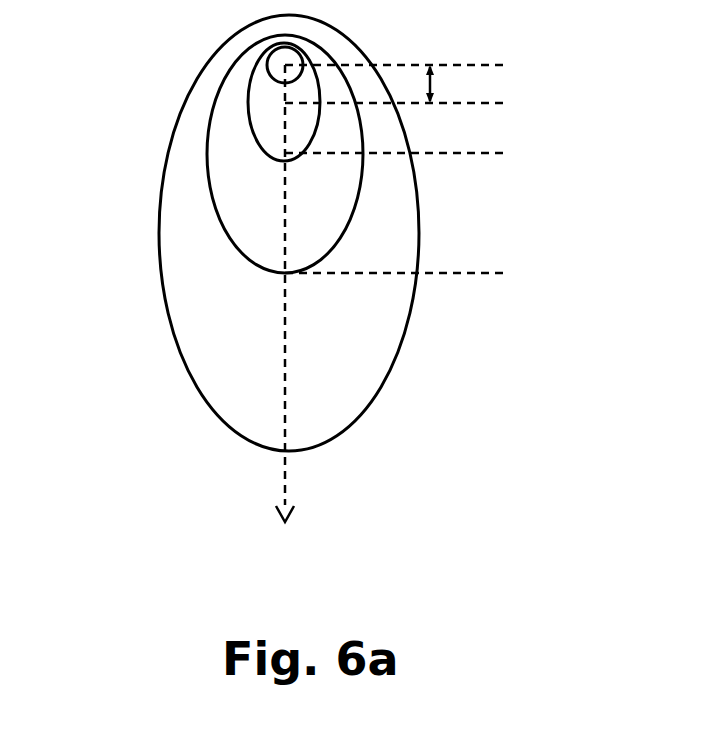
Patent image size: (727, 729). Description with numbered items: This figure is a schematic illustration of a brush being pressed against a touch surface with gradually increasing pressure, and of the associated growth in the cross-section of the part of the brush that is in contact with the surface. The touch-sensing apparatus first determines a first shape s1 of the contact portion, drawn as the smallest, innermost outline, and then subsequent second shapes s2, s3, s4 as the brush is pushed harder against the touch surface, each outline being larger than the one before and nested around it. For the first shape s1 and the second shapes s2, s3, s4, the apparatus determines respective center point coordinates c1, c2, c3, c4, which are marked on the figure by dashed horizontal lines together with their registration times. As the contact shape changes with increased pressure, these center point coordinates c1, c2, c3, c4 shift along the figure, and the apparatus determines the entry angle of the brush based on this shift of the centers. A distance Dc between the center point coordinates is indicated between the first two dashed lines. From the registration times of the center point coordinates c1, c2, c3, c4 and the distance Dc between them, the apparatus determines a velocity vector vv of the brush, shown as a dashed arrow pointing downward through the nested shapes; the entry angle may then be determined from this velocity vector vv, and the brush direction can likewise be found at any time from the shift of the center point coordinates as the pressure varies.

The first shape s1 is at (273, 54).
The second shape s2 is at (251, 110).
The second shape s3 is at (213, 170).
The second shape s4 is at (161, 229).
The center point coordinate c1 is at (433, 69).
The center point coordinate c2 is at (433, 107).
The center point coordinate c3 is at (433, 157).
The center point coordinate c4 is at (433, 277).
The distance Dc is at (447, 84).
The velocity vector vv is at (284, 312).